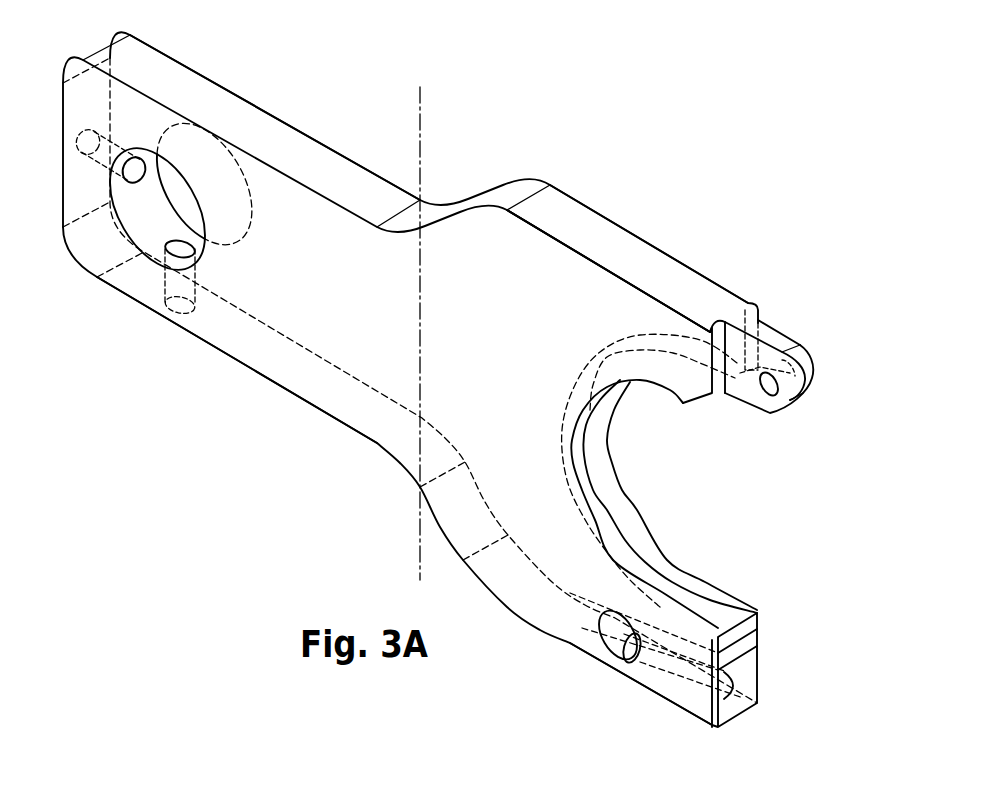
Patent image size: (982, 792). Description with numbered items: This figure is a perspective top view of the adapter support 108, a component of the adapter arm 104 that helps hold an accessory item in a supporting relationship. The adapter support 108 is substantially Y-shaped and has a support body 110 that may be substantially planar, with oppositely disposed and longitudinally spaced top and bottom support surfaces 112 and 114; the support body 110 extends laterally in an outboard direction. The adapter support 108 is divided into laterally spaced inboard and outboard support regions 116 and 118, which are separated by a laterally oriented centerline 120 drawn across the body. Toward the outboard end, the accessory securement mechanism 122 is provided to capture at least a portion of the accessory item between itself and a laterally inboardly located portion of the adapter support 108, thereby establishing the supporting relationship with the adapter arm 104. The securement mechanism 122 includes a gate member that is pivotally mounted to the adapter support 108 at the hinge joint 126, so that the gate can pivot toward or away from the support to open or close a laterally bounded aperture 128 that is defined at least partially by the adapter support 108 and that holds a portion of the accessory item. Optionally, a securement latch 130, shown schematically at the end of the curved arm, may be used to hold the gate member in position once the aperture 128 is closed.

The adapter arm 104 is at (728, 148).
The adapter support 108 is at (583, 172).
The support body 110 is at (553, 300).
The top support surface 112 is at (282, 312).
The bottom support surface 114 is at (330, 147).
The inboard support region 116 is at (289, 98).
The outboard support region 118 is at (763, 298).
The centerline 120 is at (422, 124).
The accessory securement mechanism 122 is at (800, 311).
The hinge joint 126 is at (810, 341).
The laterally bounded aperture 128 is at (706, 477).
The securement latch 130 is at (735, 713).